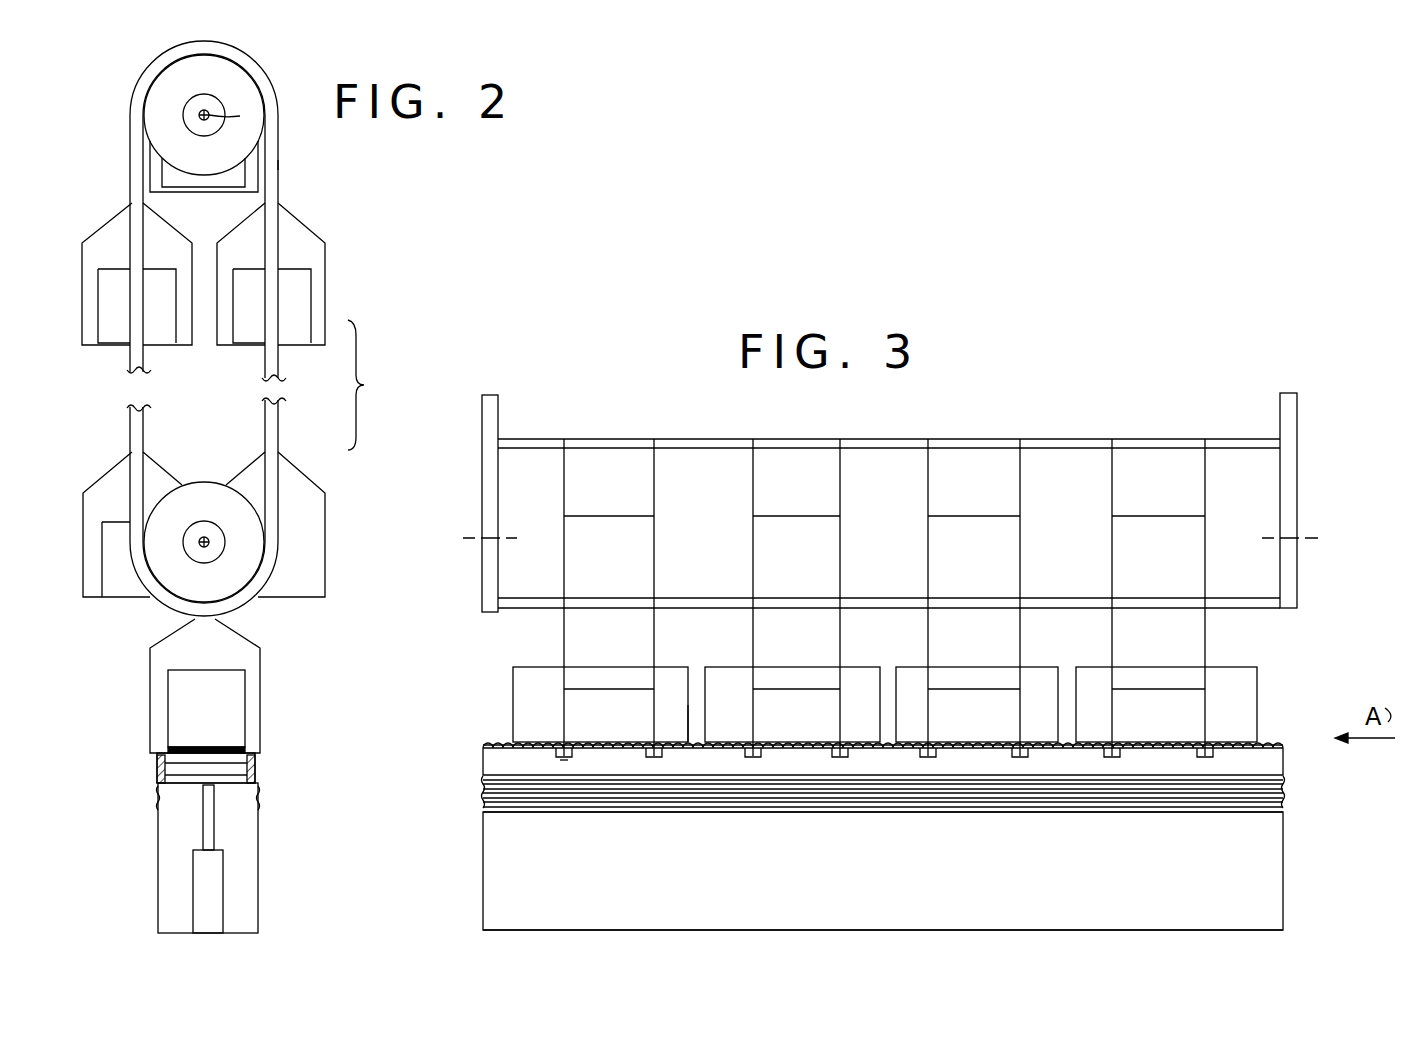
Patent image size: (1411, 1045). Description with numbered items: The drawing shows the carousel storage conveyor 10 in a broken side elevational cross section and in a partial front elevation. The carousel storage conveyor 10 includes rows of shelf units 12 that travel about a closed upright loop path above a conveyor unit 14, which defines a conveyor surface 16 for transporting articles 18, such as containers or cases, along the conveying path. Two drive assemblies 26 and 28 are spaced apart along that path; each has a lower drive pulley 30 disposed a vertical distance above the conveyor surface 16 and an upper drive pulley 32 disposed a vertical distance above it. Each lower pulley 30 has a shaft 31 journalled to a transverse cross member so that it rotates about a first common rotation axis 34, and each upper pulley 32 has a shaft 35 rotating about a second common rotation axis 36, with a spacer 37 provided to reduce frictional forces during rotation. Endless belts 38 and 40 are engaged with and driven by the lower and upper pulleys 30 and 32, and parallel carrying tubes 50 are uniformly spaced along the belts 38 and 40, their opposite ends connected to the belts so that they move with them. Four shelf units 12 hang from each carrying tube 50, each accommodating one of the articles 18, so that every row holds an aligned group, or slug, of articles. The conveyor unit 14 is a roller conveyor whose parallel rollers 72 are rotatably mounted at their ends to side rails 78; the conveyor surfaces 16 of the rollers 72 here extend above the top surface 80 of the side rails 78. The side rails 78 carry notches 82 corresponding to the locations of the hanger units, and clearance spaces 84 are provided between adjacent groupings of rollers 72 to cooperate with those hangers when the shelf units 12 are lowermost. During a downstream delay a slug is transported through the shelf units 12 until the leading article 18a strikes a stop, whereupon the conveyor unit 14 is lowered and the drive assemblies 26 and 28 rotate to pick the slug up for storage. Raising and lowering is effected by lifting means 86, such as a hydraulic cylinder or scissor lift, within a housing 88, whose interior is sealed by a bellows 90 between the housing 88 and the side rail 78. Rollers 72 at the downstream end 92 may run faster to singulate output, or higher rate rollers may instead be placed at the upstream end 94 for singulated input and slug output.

In FIG. 3, the carousel storage conveyor 10 is at (1094, 380).
In FIG. 3, the shelf units 12 is at (562, 462).
In FIG. 2, the conveyor unit 14 is at (158, 860).
In FIG. 3, the conveyor unit 14 is at (1285, 853).
In FIG. 3, the conveyor surface 16 is at (488, 740).
In FIG. 2, the articles 18 is at (172, 310).
In FIG. 3, the articles 18 is at (872, 700).
In FIG. 3, the leading article 18a is at (680, 698).
In FIG. 2, the drive assembly 26 is at (122, 88).
In FIG. 3, the drive assembly 26 is at (481, 412).
In FIG. 3, the drive assembly 28 is at (1296, 405).
In FIG. 2, the lower drive pulley 30 is at (208, 480).
In FIG. 2, the shaft 31 is at (200, 536).
In FIG. 2, the upper drive pulley 32 is at (160, 136).
In FIG. 2, the first common rotation axis 34 is at (212, 547).
In FIG. 3, the first common rotation axis 34 is at (464, 537).
In FIG. 2, the shaft 35 is at (225, 117).
In FIG. 2, the second common rotation axis 36 is at (208, 112).
In FIG. 2, the spacer 37 is at (184, 115).
In FIG. 2, the endless belt 38 is at (280, 158).
In FIG. 3, the endless belt 38 is at (486, 613).
In FIG. 3, the endless belt 40 is at (1290, 610).
In FIG. 3, the carrying tubes 50 is at (884, 438).
In FIG. 2, the rollers 72 is at (183, 762).
In FIG. 3, the rollers 72 is at (510, 744).
In FIG. 2, the side rails 78 is at (257, 765).
In FIG. 3, the side rails 78 is at (490, 765).
In FIG. 3, the top surface 80 is at (483, 748).
In FIG. 3, the notches 82 is at (555, 758).
In FIG. 3, the clearance spaces 84 is at (563, 758).
In FIG. 2, the lifting means 86 is at (214, 818).
In FIG. 2, the housing 88 is at (258, 866).
In FIG. 2, the bellows 90 is at (258, 795).
In FIG. 3, the bellows 90 is at (1287, 796).
In FIG. 3, the downstream end 92 is at (484, 874).
In FIG. 3, the upstream end 94 is at (1285, 908).